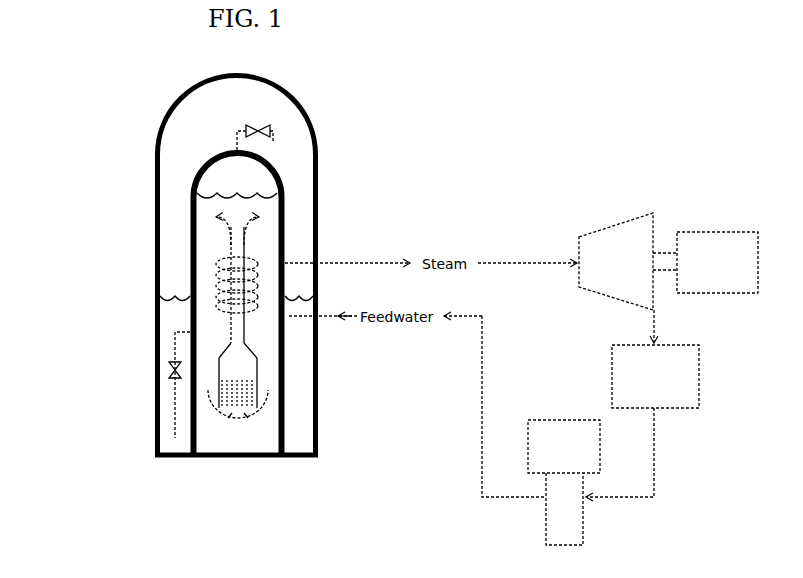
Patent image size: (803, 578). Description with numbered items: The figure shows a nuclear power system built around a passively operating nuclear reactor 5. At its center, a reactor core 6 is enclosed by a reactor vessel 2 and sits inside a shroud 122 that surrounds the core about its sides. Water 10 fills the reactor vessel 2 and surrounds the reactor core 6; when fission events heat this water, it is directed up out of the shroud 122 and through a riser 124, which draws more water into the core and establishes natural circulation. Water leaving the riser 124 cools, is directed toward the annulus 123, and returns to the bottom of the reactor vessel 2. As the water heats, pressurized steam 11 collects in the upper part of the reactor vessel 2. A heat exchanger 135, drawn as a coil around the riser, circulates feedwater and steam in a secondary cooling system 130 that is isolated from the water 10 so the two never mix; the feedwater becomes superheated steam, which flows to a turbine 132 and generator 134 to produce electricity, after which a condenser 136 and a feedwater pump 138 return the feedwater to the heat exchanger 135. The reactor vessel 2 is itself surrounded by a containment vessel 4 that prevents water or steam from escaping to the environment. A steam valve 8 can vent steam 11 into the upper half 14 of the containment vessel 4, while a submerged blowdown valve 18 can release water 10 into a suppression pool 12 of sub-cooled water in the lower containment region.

The reactor vessel 2 is at (290, 208).
The containment vessel 4 is at (322, 162).
The nuclear reactor 5 is at (140, 156).
The reactor core 6 is at (265, 385).
The steam valve 8 is at (258, 126).
The water 10 is at (207, 237).
The pressurized steam 11 is at (230, 172).
The suppression pool 12 is at (300, 425).
The upper half of the containment vessel 14 is at (220, 126).
The submerged blowdown valve 18 is at (167, 373).
The shroud 122 is at (260, 367).
The annulus 123 is at (255, 340).
The riser 124 is at (253, 247).
The secondary cooling system 130 is at (643, 348).
The turbine 132 is at (601, 267).
The generator 134 is at (706, 267).
The heat exchanger 135 is at (210, 278).
The condenser 136 is at (636, 391).
The feedwater pump 138 is at (548, 453).